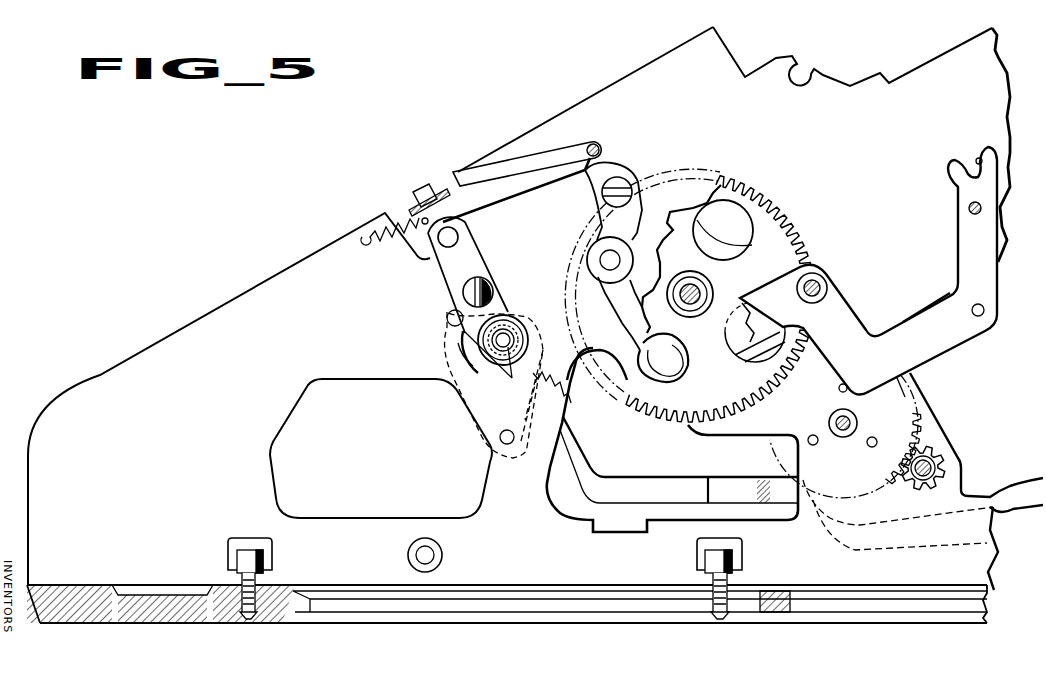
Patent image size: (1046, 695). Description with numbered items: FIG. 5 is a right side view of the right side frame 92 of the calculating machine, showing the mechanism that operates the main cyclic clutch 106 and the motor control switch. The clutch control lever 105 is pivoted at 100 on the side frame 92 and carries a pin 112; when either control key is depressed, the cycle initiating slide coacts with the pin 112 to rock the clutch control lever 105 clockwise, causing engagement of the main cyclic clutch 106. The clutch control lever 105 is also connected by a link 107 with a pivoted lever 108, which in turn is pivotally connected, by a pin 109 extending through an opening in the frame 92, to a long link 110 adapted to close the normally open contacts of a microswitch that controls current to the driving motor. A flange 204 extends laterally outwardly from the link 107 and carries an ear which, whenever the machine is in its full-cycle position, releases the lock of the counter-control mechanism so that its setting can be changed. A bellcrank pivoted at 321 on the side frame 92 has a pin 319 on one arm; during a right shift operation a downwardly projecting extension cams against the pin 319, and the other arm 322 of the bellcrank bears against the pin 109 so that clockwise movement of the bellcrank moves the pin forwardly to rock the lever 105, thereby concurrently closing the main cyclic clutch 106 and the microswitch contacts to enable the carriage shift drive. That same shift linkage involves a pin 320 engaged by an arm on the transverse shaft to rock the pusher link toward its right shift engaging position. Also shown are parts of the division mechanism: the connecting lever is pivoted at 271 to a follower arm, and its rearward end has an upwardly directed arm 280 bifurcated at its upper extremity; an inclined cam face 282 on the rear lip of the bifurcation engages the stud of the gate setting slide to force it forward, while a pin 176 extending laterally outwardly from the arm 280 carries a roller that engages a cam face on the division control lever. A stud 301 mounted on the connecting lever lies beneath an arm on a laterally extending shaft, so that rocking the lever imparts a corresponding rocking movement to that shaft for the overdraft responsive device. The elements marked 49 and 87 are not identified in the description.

The side frame 92 is at (288, 268).
The flange 204 is at (422, 200).
The link 107 is at (537, 160).
The pin 112 is at (597, 143).
The pivot 100 is at (620, 182).
The main cyclic clutch 106 is at (676, 203).
The clutch control lever 105 is at (590, 182).
The pivoted lever 108 is at (472, 250).
The pin 109 is at (506, 336).
The pin 319 is at (446, 320).
The pin 320 is at (446, 346).
The pivot 321 is at (507, 445).
The arm 322 is at (572, 396).
The long link 110 is at (622, 488).
The gear shaft 49 is at (706, 287).
The pivot 271 is at (815, 280).
The arm 280 is at (874, 257).
The inclined cam face 282 is at (984, 148).
The pin 176 is at (968, 212).
The stud 301 is at (977, 318).
The pinion 87 is at (937, 458).